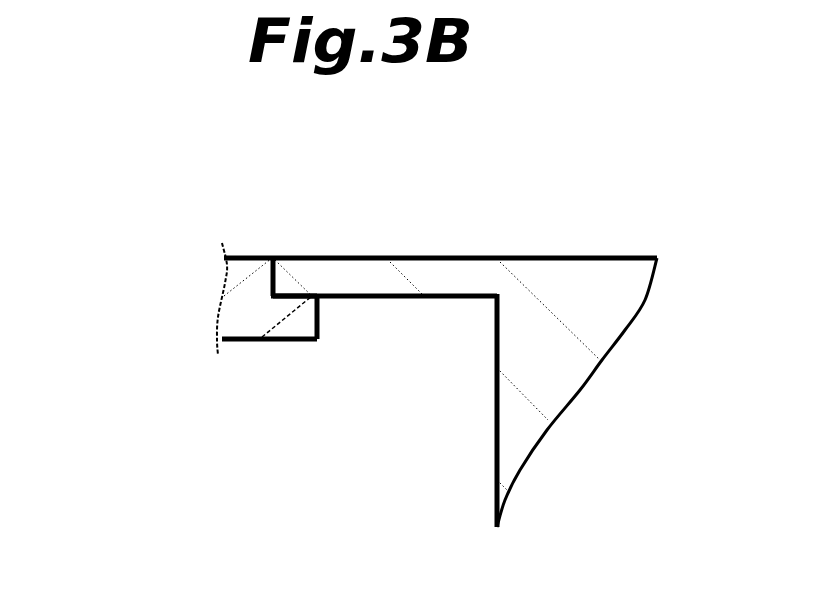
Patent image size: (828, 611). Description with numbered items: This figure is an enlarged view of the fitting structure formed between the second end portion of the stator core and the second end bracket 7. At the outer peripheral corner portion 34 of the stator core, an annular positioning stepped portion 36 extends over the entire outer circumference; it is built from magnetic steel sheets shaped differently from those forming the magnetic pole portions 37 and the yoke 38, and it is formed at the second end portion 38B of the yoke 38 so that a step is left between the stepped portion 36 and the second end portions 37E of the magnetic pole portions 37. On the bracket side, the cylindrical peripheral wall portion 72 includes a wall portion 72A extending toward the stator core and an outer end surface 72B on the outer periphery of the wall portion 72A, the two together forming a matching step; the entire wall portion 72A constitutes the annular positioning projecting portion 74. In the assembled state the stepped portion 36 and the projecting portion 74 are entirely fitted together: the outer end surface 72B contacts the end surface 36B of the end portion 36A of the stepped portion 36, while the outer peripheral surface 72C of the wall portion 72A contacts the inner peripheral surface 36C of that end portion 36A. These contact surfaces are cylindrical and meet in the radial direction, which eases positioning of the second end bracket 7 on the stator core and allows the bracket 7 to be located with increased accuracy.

The second end bracket 7 is at (247, 257).
The outer peripheral corner portion 34 is at (493, 301).
The annular positioning stepped portion 36 is at (298, 274).
The end portion of annular positioning stepped portion 36A is at (300, 258).
The end surface 36B is at (274, 283).
The inner peripheral surface 36C is at (318, 300).
The magnetic pole portion 37 is at (521, 392).
The second end portion of magnetic pole portion 37E is at (493, 370).
The yoke 38 is at (570, 257).
The second end portion of yoke 38B is at (522, 257).
The cylindrical peripheral wall portion 72 is at (235, 322).
The annular positioning projecting portion 74 is at (235, 290).
The wall portion 72A is at (296, 340).
The outer end surface 72B is at (271, 294).
The outer peripheral surface 72C is at (290, 296).